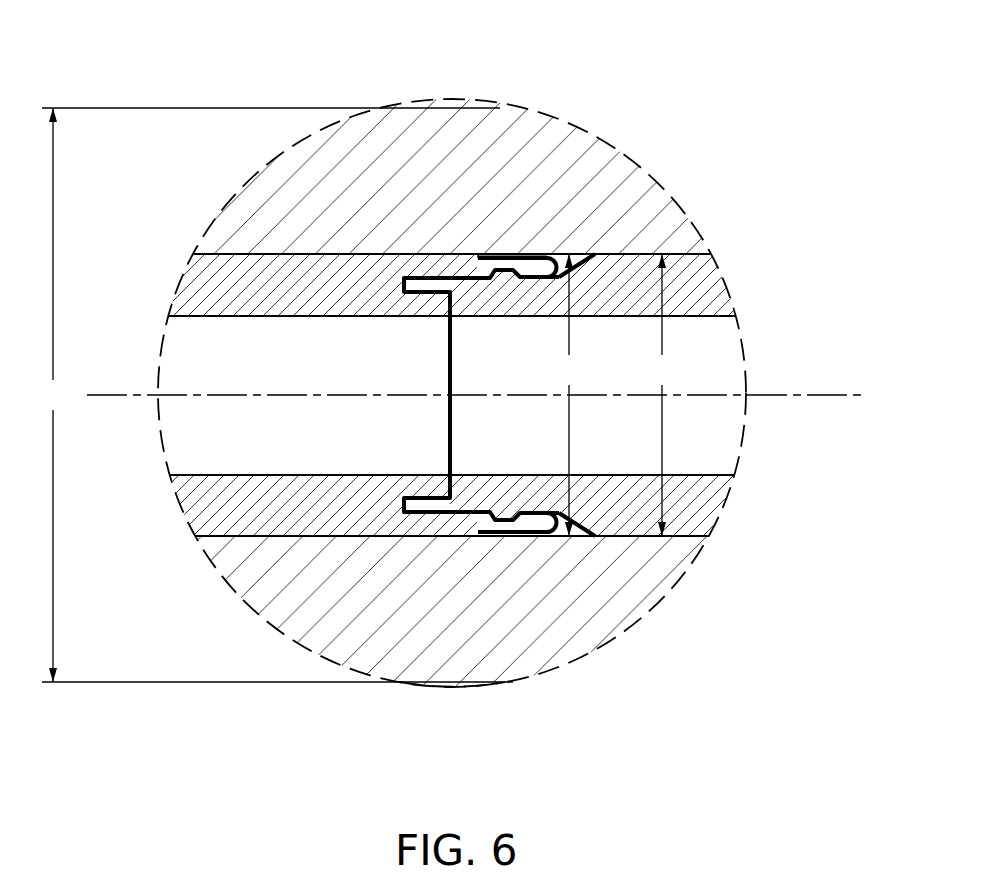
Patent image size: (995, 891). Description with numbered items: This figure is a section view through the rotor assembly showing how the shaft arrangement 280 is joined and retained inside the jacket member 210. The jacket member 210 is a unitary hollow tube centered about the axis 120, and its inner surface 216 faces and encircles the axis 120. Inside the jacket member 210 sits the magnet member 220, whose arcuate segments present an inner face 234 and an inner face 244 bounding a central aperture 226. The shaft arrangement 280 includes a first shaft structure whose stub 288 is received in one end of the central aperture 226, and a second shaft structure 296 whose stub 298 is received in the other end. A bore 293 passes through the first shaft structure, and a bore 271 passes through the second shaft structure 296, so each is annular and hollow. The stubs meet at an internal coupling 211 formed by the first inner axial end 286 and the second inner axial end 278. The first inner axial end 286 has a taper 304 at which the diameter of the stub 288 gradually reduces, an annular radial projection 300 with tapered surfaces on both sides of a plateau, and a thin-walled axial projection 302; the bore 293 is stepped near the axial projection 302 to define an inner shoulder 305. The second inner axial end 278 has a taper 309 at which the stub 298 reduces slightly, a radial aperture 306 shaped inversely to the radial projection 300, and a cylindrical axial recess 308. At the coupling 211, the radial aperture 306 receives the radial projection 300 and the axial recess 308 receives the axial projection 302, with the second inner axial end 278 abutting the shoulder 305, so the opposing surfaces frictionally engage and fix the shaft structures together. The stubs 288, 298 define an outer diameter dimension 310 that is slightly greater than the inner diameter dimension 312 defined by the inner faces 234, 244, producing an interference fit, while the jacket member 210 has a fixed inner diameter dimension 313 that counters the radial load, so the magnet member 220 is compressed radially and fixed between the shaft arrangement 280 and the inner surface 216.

The jacket member 210 is at (472, 100).
The magnet member 220 is at (553, 178).
The internal coupling 211 is at (455, 250).
The taper 309 is at (477, 256).
The stub 288 is at (619, 256).
The shaft arrangement 280 is at (692, 285).
The central aperture 226 is at (725, 347).
The axis 120 is at (827, 395).
The inner face 234 is at (280, 256).
The stub 298 is at (196, 285).
The axial recess 308 is at (427, 288).
The radial aperture 306 is at (507, 270).
The inner diameter dimension 312 is at (573, 395).
The outer diameter dimension 310 is at (666, 395).
The inner diameter dimension 313 is at (273, 395).
The bore 271 is at (192, 476).
The second shaft structure 296 is at (265, 492).
The inner shoulder 305 is at (443, 490).
The first inner axial end 286 is at (518, 485).
The bore 293 is at (713, 477).
The axial projection 302 is at (422, 513).
The second inner axial end 278 is at (452, 534).
The radial projection 300 is at (505, 516).
The taper 304 is at (578, 534).
The inner face 244 is at (284, 537).
The inner surface 216 is at (452, 684).